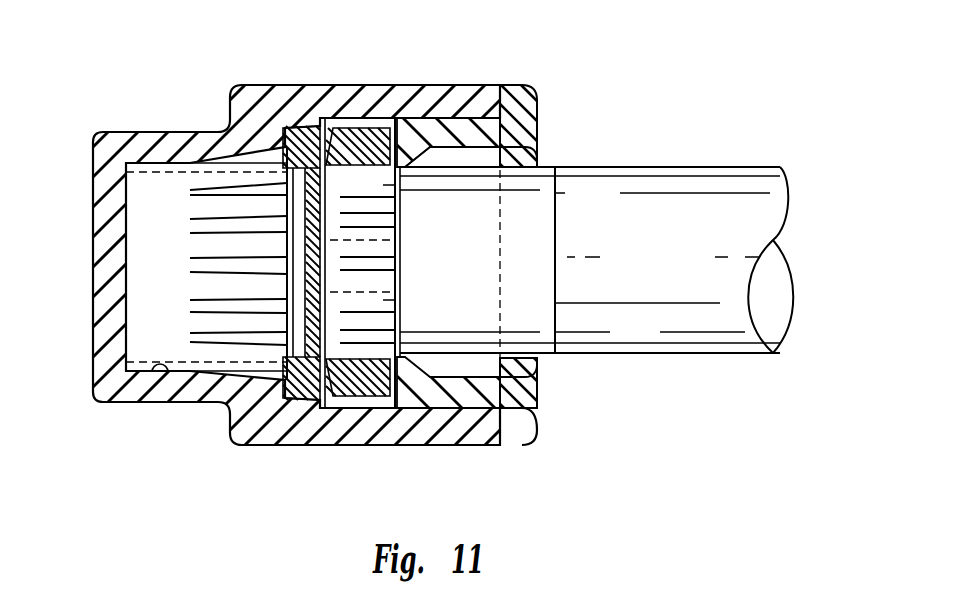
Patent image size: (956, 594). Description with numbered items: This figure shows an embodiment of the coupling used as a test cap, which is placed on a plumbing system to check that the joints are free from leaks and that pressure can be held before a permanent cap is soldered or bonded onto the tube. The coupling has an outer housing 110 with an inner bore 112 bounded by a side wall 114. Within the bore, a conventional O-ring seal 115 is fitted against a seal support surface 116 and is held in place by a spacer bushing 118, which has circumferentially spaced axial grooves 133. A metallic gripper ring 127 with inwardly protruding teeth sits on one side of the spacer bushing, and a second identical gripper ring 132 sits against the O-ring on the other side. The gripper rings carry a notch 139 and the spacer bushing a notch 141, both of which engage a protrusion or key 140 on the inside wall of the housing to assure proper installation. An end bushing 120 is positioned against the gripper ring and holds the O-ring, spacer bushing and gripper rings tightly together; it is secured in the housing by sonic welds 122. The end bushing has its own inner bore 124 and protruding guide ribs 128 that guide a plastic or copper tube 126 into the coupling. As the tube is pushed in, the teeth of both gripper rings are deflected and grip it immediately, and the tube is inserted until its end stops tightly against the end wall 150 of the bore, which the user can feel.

The outer housing 110 is at (455, 430).
The inner bore 112 is at (192, 374).
The side wall 114 is at (165, 376).
The O-ring seal 115 is at (268, 92).
The seal support surface 116 is at (303, 406).
The spacer bushing 118 is at (360, 128).
The end bushing 120 is at (545, 120).
The sonic welds 122 is at (526, 85).
The inner bore of end bushing 124 is at (556, 362).
The tube 126 is at (732, 167).
The gripper ring 127 is at (392, 414).
The guide ribs 128 is at (545, 176).
The second gripper ring 132 is at (328, 330).
The axial grooves 133 is at (370, 180).
The notch 139 is at (422, 130).
The key 140 is at (305, 125).
The notch 141 is at (397, 135).
The end wall 150 is at (126, 218).